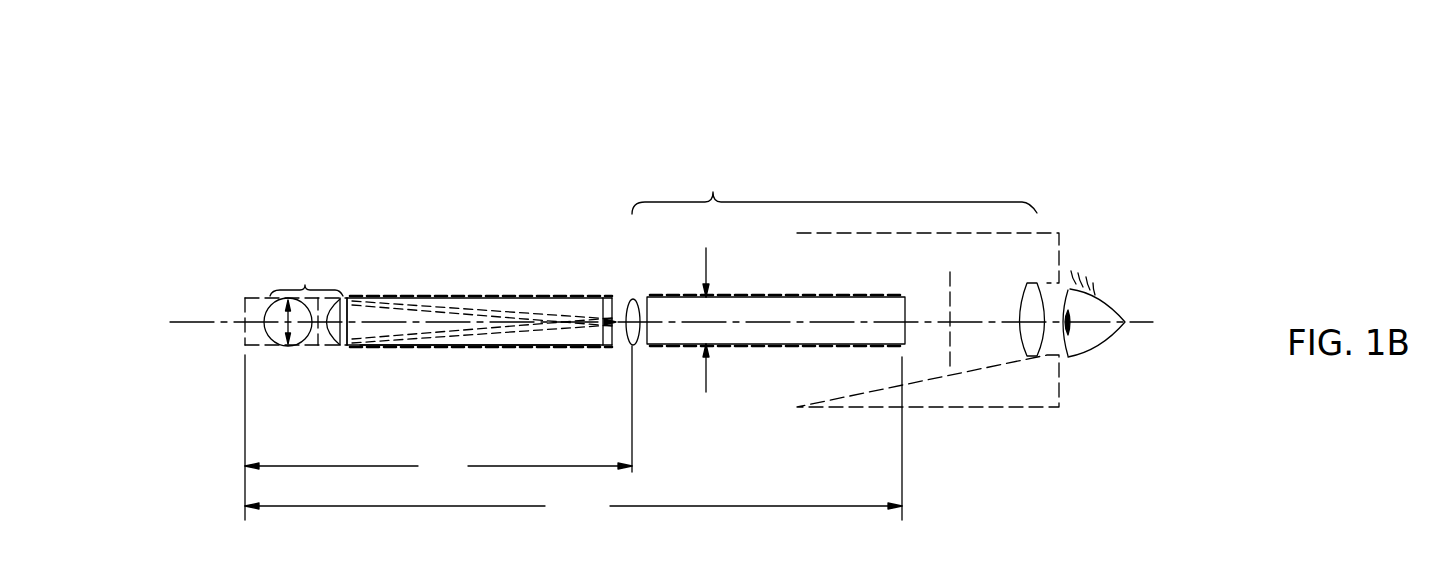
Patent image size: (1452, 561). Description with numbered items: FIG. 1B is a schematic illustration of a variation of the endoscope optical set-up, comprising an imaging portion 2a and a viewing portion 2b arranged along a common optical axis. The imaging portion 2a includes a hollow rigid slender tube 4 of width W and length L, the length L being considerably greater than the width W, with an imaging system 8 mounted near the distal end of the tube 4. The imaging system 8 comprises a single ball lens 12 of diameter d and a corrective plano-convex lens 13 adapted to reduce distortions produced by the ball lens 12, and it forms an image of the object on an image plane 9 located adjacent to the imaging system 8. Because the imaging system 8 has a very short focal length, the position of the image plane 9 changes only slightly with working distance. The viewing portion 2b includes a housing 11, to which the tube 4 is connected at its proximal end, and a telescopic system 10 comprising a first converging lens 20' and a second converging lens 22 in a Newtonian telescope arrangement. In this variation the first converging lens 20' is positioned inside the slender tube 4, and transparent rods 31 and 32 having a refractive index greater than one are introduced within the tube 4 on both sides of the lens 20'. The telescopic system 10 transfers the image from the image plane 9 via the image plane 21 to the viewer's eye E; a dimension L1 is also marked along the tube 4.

The imaging portion 2a is at (437, 197).
The viewing portion 2b is at (947, 177).
The slender tube 4 is at (540, 348).
The imaging system 8 is at (305, 286).
The image plane 9 is at (327, 346).
The telescopic system 10 is at (713, 192).
The housing 11 is at (837, 410).
The ball lens 12 is at (298, 336).
The plano-convex lens 13 is at (340, 335).
The first converging lens 20' is at (650, 296).
The image plane 21 is at (950, 278).
The second converging lens 22 is at (1040, 357).
The transparent rod 31 is at (503, 308).
The transparent rod 32 is at (858, 305).
The viewer's eye E is at (1090, 338).
The diameter of the ball lens d is at (288, 323).
The width of the tube W is at (688, 320).
The length of the tube L is at (573, 507).
The first section length L1 is at (438, 471).